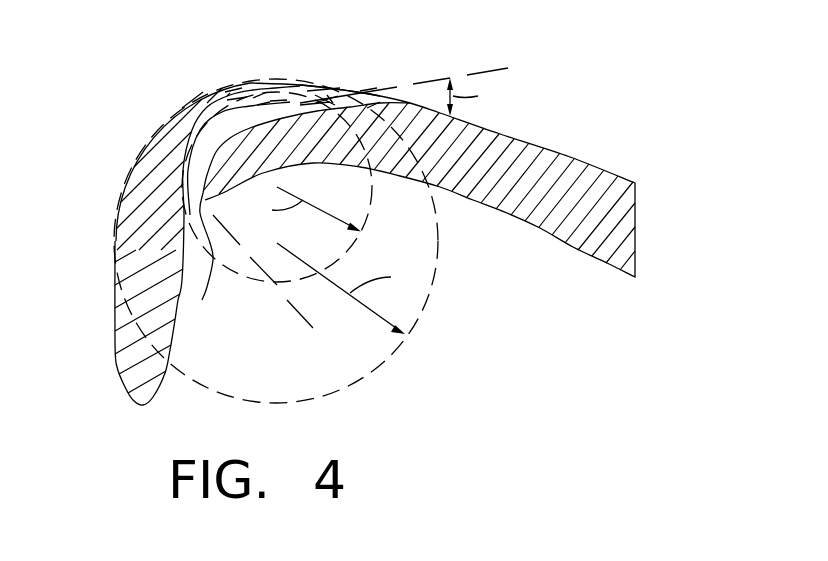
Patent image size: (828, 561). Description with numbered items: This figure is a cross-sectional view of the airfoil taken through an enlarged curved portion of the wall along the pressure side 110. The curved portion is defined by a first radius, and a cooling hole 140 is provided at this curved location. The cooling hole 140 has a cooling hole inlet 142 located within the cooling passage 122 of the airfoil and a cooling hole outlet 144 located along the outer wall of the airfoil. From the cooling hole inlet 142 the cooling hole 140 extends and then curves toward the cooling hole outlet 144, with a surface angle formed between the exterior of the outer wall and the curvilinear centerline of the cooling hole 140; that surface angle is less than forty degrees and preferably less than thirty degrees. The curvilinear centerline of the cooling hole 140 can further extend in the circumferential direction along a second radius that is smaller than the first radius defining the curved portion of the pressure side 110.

The pressure side 110 is at (538, 147).
The cooling passage 122 is at (510, 321).
The cooling hole 140 is at (259, 108).
The cooling hole inlet 142 is at (203, 300).
The cooling hole outlet 144 is at (336, 85).